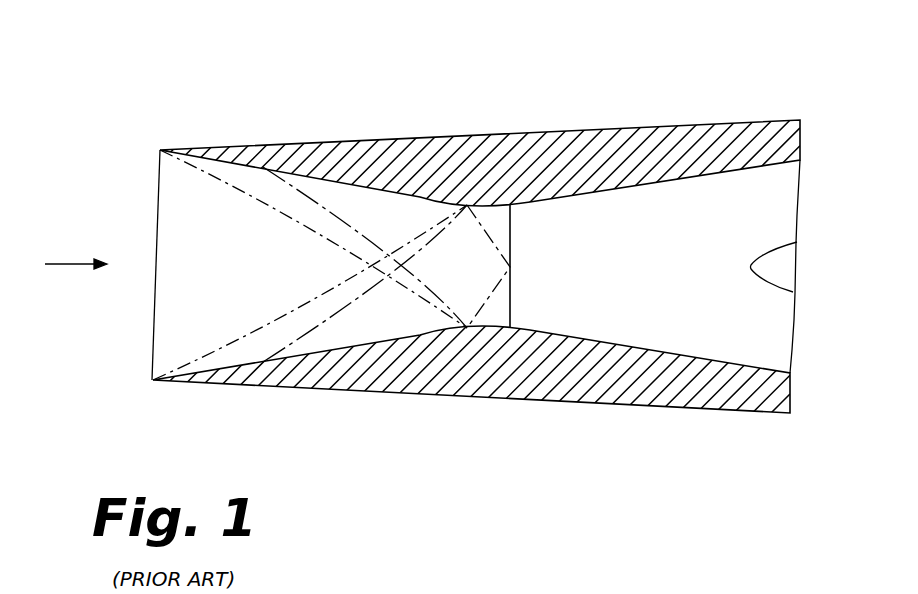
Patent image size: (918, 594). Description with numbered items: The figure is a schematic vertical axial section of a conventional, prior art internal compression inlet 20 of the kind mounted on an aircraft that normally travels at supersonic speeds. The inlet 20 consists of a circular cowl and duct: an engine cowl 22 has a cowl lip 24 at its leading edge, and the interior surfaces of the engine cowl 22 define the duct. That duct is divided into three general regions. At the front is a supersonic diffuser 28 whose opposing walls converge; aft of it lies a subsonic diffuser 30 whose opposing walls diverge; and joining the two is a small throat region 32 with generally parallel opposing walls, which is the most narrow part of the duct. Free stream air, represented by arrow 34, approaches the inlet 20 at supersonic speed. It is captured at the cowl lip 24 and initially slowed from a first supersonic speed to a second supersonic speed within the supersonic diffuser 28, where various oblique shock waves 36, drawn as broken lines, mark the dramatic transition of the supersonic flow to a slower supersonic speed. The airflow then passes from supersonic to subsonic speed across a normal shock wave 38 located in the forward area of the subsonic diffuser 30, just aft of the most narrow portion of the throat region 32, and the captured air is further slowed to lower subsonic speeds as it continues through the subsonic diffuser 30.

The internal compression inlet 20 is at (496, 92).
The engine cowl 22 is at (578, 129).
The cowl lip 24 is at (160, 150).
The supersonic diffuser 28 is at (212, 268).
The subsonic diffuser 30 is at (658, 262).
The throat region 32 is at (465, 270).
The arrow representing free stream air 34 is at (73, 265).
The oblique shock waves 36 is at (218, 182).
The normal shock wave 38 is at (511, 280).